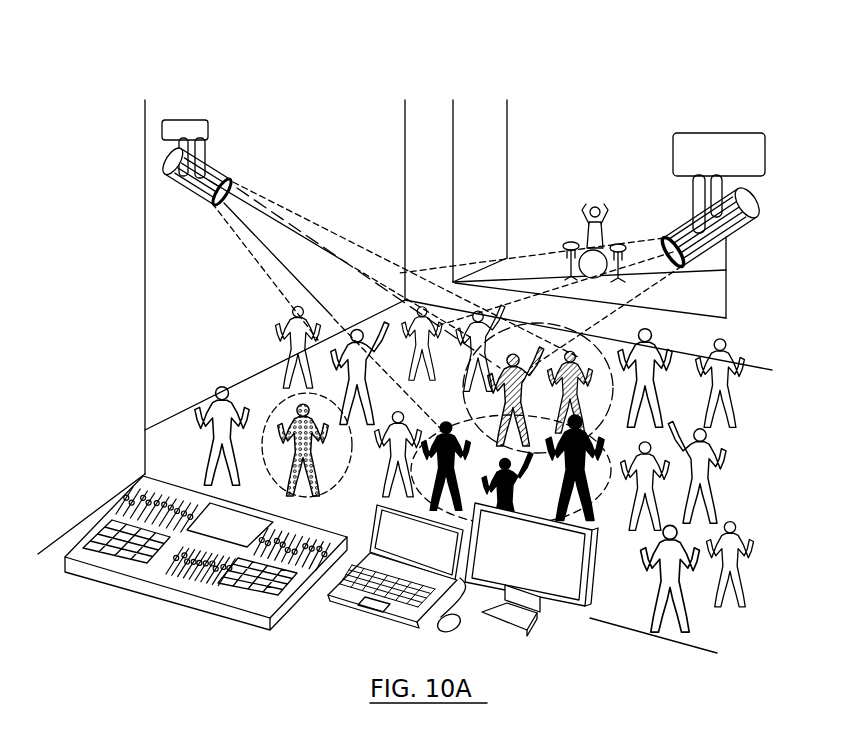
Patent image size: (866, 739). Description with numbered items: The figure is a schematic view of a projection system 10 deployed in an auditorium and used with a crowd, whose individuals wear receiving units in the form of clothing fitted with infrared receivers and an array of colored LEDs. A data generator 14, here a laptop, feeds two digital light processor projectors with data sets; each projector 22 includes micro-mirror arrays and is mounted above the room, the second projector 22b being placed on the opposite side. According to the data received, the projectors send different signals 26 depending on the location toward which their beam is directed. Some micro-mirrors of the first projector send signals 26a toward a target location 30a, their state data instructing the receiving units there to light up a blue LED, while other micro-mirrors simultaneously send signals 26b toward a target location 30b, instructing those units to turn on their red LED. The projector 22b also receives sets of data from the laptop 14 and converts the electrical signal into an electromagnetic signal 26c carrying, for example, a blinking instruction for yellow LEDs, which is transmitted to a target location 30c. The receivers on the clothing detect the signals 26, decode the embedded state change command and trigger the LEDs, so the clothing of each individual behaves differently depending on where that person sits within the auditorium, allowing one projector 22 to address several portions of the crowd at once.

The projection system 10 is at (446, 351).
The data generator 14 is at (370, 613).
The projector 22 is at (213, 167).
The projector 22b is at (760, 197).
The signals 26 is at (312, 226).
The signals 26a is at (347, 263).
The signals 26b is at (298, 279).
The electromagnetic signal 26c is at (647, 250).
The target location 30a is at (597, 343).
The target location 30b is at (597, 526).
The target location 30c is at (283, 403).